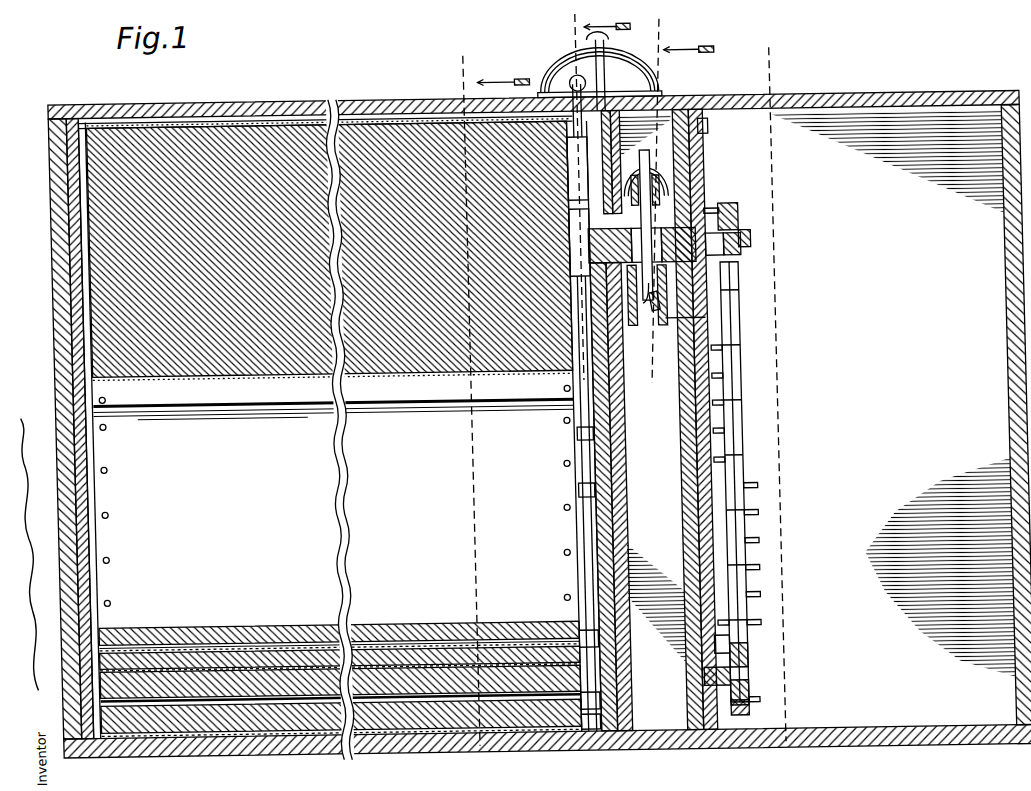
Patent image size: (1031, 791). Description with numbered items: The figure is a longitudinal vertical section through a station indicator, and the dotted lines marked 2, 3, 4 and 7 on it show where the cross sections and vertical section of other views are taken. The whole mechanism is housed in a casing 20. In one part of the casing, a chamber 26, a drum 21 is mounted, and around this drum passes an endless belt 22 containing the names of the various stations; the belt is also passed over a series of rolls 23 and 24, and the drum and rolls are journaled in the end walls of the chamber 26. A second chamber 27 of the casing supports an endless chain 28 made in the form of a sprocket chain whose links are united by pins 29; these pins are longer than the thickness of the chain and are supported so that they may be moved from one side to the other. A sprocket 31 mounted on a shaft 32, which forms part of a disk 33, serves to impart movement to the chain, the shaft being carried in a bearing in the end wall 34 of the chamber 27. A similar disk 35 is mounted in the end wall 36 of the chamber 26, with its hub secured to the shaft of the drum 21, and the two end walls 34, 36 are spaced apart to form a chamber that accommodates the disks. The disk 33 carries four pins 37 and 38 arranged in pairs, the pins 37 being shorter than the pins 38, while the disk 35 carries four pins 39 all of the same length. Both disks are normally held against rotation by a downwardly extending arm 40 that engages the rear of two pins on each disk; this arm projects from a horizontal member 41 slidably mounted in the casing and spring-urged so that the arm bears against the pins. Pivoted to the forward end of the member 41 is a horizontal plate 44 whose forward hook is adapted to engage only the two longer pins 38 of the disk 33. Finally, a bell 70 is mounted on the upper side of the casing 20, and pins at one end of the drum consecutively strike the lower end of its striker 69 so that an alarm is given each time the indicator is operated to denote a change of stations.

The dotted line 2— 2 is at (501, 411).
The dotted line 3— 3 is at (772, 404).
The dotted line 4— 4 is at (680, 212).
The line 7— 7 is at (603, 206).
The casing 20 is at (838, 111).
The drum 21 is at (103, 188).
The endless belt 22 is at (333, 396).
The roll 23 is at (406, 686).
The roll 24 is at (361, 636).
The chamber 26 is at (66, 387).
The chamber 27 is at (891, 395).
The endless chain 28 is at (738, 410).
The pins 29 is at (708, 403).
The sprocket 31 is at (734, 230).
The shaft 32 is at (747, 252).
The disk 33 is at (698, 215).
The end wall 34 is at (678, 512).
The disk 35 is at (634, 319).
The end wall 36 is at (614, 485).
The pins 37 is at (660, 327).
The pins 38 is at (646, 186).
The pins 39 is at (642, 308).
The arm 40 is at (573, 344).
The horizontal member 41 is at (646, 165).
The horizontal plate 44 is at (689, 174).
The striker 69 is at (588, 89).
The bell 70 is at (599, 71).